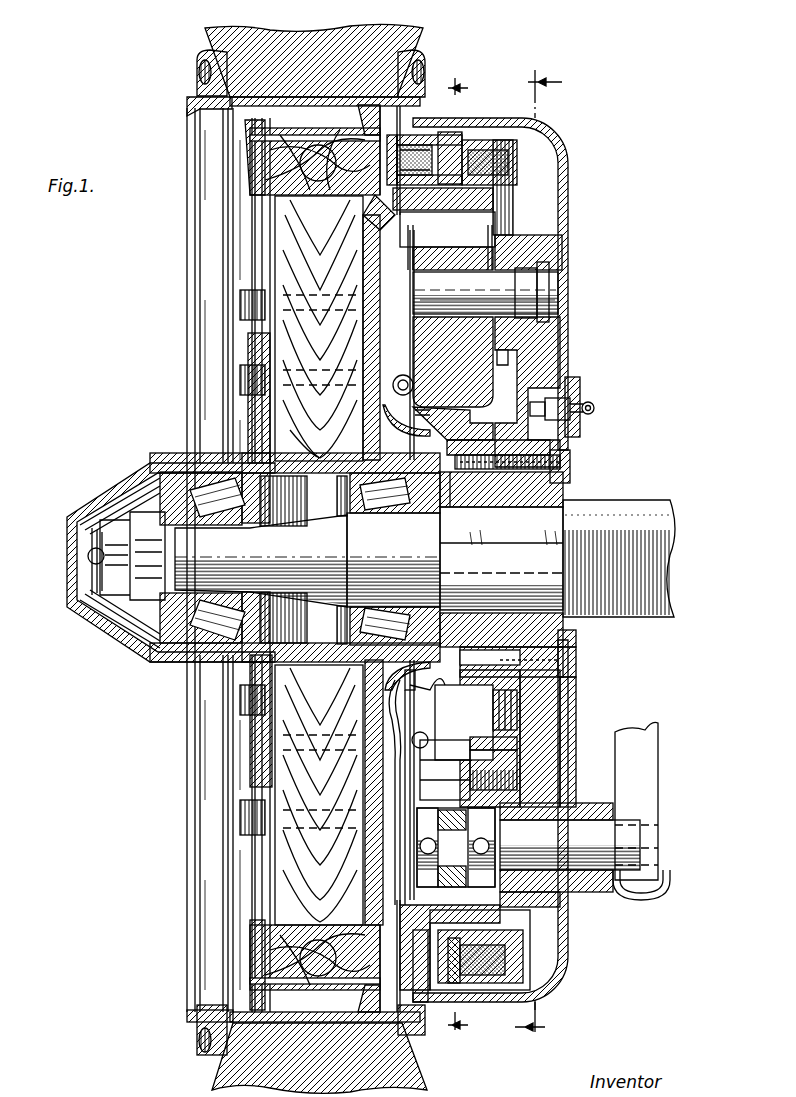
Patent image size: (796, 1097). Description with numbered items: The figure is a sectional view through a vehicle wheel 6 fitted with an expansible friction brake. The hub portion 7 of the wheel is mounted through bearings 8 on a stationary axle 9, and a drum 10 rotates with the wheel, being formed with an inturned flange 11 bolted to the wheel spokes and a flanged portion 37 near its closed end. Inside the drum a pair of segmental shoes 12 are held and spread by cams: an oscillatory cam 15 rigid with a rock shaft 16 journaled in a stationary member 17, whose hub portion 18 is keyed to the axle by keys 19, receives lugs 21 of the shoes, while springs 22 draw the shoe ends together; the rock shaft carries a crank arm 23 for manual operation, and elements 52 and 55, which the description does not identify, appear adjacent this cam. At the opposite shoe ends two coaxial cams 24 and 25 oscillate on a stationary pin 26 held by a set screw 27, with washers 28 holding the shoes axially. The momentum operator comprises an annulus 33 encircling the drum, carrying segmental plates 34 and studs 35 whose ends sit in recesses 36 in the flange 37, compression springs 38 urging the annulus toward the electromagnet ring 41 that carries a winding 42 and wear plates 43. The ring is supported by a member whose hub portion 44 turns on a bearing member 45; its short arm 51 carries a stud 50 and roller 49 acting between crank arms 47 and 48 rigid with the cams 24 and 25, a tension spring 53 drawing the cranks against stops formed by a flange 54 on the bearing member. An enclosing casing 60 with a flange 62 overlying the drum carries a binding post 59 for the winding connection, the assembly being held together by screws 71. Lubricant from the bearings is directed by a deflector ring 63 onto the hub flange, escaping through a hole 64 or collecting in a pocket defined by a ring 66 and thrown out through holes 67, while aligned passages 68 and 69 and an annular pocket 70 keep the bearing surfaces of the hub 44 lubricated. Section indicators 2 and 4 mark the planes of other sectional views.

The flanged portion 37 is at (398, 30).
The compression springs 38 is at (360, 126).
The springs 22 is at (365, 395).
The cam 25 is at (363, 280).
The hole 64 is at (380, 330).
The ring 66 is at (378, 258).
The hub portion 7 is at (300, 455).
The vehicle wheel 6 is at (280, 262).
The holes 67 is at (270, 230).
The bearings 8 is at (255, 515).
The axle 9 is at (307, 559).
The keys 19 is at (500, 562).
The hub portion 18 is at (525, 507).
The flange 54 is at (455, 507).
The bearing member 45 is at (568, 582).
The enclosing casing 60 is at (568, 325).
The drum 10 is at (500, 990).
The annulus 33 is at (450, 130).
The studs 35 is at (435, 150).
The recesses 36 is at (445, 130).
The segmental plates 34 is at (480, 138).
The ring 41 is at (512, 150).
The flange 62 is at (510, 140).
The washers 28 is at (410, 226).
The cam 24 is at (505, 240).
The stationary pin 26 is at (505, 280).
The set screw 27 is at (565, 298).
The crank arm 47 is at (480, 392).
The crank arm 48 is at (395, 380).
The annular deflector ring 63 is at (400, 686).
The hub portion 44 is at (570, 446).
The screws 71 is at (570, 465).
The binding post 59 is at (588, 400).
The passage 68 is at (577, 637).
The annular pocket 70 is at (577, 655).
The passage 69 is at (580, 662).
The roller 49 is at (578, 690).
The member 17 is at (565, 712).
The short arm 51 is at (565, 740).
The stud 50 is at (565, 765).
The rock shaft 16 is at (605, 888).
The crank arm 23 is at (660, 770).
The roller 52 is at (456, 847).
The roller 55 is at (484, 845).
The shoes 12 is at (405, 785).
The oscillatory cam 15 is at (425, 835).
The inturned flange 11 is at (385, 860).
The coiled tension spring 53 is at (385, 700).
The lugs 21 is at (400, 898).
The winding 42 is at (465, 985).
The wear plates 43 is at (455, 990).
The section line 4 is at (461, 560).
The section line 2 is at (540, 553).